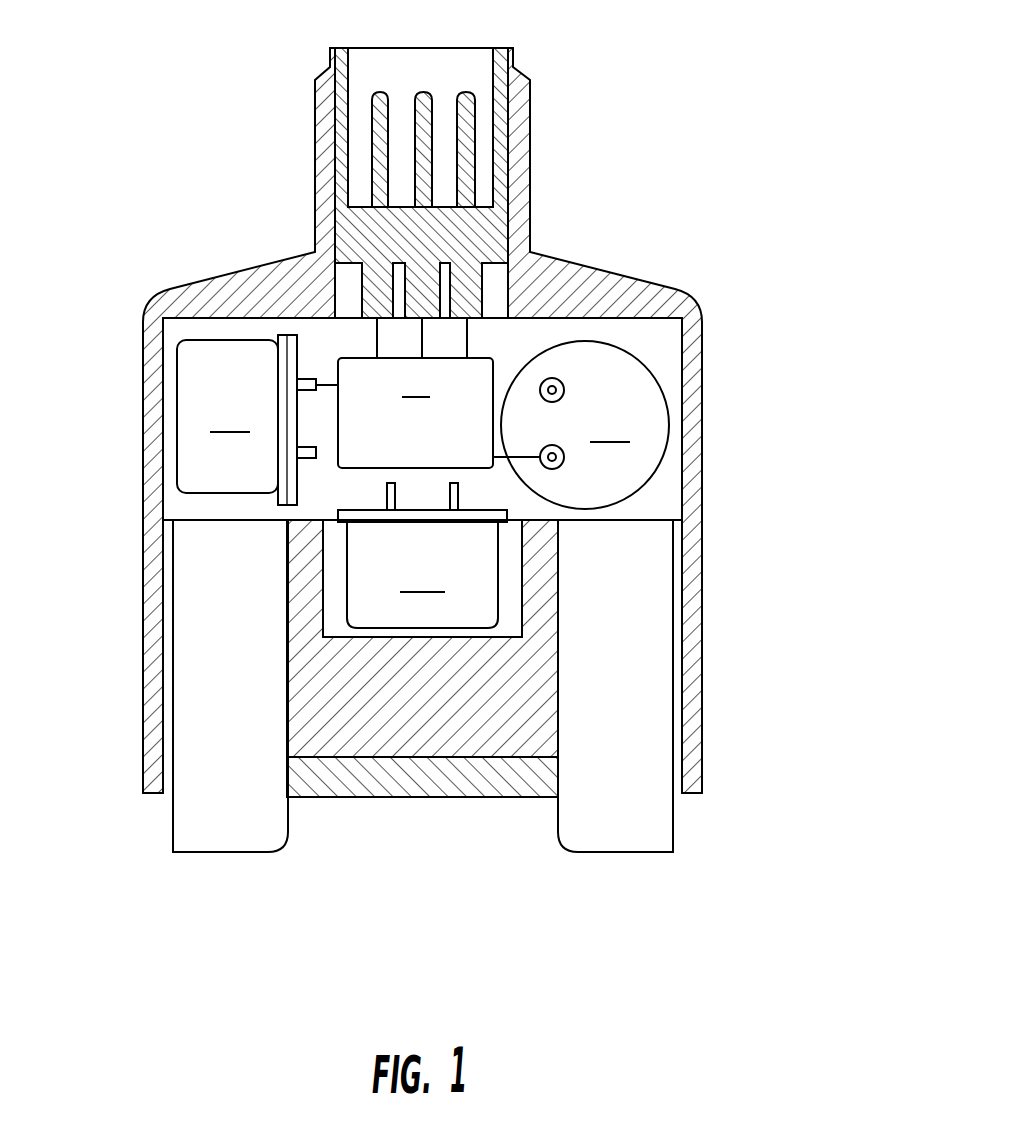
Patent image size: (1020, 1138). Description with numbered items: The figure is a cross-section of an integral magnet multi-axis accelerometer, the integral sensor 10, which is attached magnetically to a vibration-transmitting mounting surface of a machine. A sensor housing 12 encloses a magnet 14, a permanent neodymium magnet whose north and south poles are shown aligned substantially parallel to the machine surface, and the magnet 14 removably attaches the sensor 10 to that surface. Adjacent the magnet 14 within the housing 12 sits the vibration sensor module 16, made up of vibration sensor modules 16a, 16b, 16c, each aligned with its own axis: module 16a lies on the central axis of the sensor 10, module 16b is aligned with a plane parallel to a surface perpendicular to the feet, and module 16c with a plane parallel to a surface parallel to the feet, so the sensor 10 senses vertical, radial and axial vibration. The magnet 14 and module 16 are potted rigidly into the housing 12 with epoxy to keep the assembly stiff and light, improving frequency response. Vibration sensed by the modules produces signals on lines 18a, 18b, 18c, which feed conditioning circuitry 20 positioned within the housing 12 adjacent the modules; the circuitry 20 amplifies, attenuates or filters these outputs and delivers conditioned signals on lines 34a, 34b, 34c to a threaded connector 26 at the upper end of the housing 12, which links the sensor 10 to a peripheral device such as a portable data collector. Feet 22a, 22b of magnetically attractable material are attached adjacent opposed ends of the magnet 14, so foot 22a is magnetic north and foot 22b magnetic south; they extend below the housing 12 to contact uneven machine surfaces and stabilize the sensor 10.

The integral sensor 10 is at (457, 431).
The sensor housing 12 is at (615, 273).
The magnet 14 is at (440, 749).
The vibration sensor module 16 is at (692, 410).
The vibration sensor module 16a is at (422, 555).
The vibration sensor module 16b is at (246, 420).
The vibration sensor module 16c is at (585, 425).
The line 18a is at (387, 478).
The line 18b is at (377, 335).
The line 18c is at (505, 517).
The conditioning circuitry 20 is at (415, 413).
The foot 22a is at (173, 830).
The foot 22b is at (673, 838).
The threaded connector 26 is at (317, 157).
The line 34a is at (328, 380).
The line 34b is at (422, 335).
The line 34c is at (467, 350).